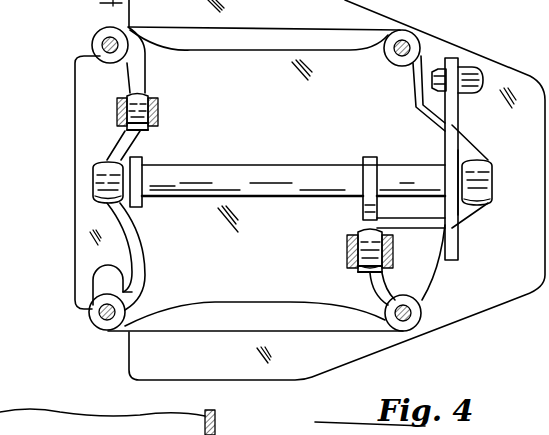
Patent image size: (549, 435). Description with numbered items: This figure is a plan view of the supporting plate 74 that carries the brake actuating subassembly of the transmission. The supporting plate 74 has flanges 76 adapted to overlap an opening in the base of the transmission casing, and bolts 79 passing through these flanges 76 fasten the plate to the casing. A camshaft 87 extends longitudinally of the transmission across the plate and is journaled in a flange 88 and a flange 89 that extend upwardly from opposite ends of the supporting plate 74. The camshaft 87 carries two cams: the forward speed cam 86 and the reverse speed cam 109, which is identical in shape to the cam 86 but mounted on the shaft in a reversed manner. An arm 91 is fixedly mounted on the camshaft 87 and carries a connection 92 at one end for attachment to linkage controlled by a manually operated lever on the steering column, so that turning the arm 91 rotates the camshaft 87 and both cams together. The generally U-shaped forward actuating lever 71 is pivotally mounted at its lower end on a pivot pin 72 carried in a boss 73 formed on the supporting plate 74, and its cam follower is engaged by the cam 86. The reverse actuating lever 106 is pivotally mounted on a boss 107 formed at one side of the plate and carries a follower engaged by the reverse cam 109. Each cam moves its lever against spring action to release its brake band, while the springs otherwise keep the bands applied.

The supporting plate 74 is at (256, 257).
The flanges 76 is at (94, 44).
The bolts 79 is at (110, 54).
The actuating lever 106 is at (155, 99).
The boss 107 is at (160, 122).
The reverse speed cam 109 is at (143, 166).
The flange 88 is at (98, 186).
The camshaft 87 is at (280, 174).
The cam 86 is at (378, 160).
The arm 91 is at (459, 131).
The connection 92 is at (478, 80).
The flange 89 is at (494, 176).
The pivot pin 72 is at (347, 250).
The actuating lever 71 is at (356, 268).
The boss 73 is at (360, 274).